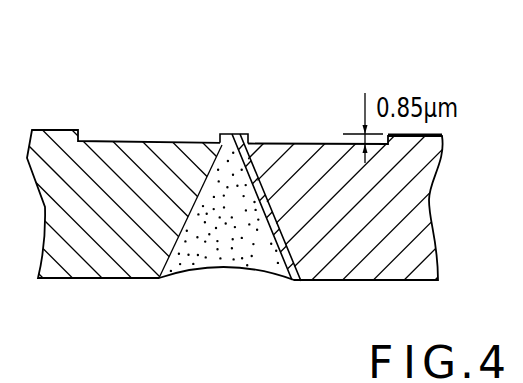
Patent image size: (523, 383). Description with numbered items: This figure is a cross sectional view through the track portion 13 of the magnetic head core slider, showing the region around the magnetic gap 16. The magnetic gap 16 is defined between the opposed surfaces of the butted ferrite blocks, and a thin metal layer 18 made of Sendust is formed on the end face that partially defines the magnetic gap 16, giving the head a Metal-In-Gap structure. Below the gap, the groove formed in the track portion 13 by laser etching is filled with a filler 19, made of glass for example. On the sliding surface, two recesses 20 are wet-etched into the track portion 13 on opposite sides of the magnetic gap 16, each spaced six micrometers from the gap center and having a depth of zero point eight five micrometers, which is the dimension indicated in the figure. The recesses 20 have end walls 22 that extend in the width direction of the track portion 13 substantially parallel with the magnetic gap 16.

The track portion 13 is at (138, 109).
The magnetic gap 16 is at (229, 119).
The metal layer 18 is at (250, 139).
The filler 19 is at (223, 257).
The recesses 20 is at (104, 142).
The end walls 22 is at (219, 139).